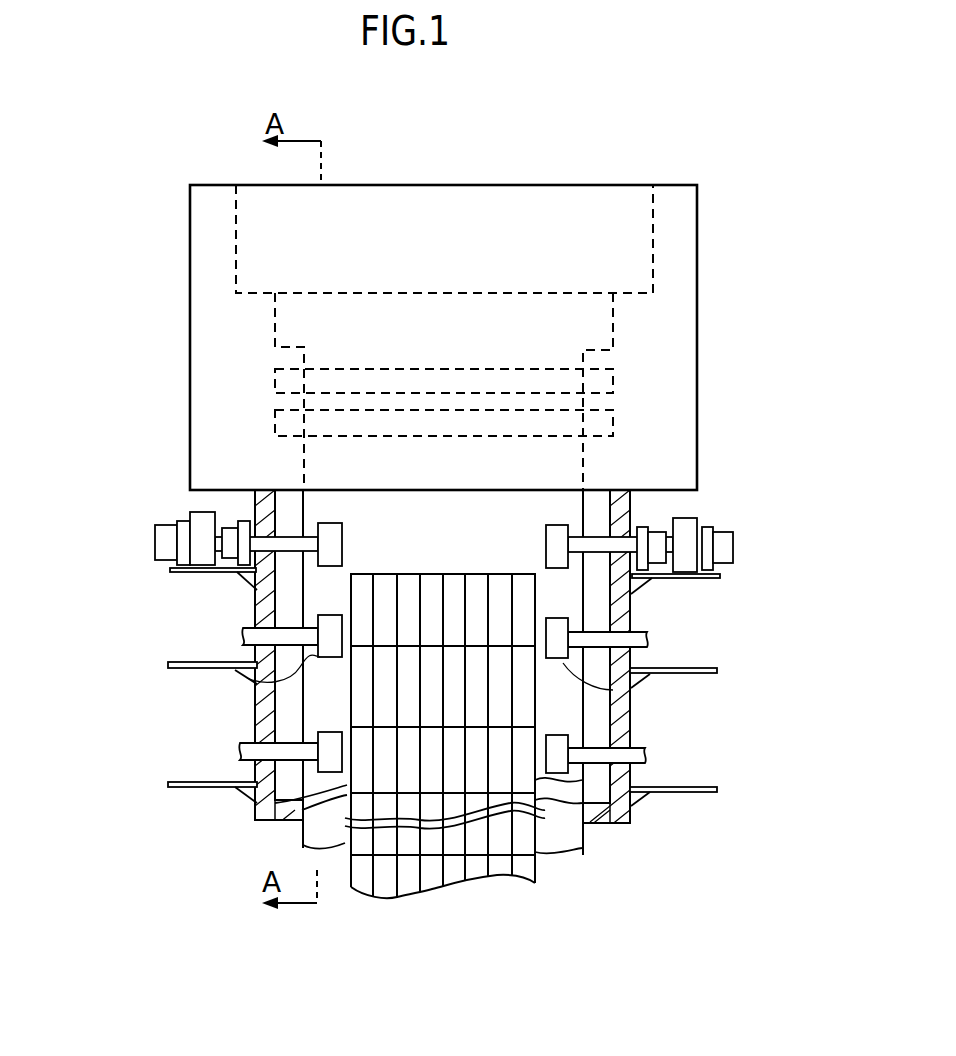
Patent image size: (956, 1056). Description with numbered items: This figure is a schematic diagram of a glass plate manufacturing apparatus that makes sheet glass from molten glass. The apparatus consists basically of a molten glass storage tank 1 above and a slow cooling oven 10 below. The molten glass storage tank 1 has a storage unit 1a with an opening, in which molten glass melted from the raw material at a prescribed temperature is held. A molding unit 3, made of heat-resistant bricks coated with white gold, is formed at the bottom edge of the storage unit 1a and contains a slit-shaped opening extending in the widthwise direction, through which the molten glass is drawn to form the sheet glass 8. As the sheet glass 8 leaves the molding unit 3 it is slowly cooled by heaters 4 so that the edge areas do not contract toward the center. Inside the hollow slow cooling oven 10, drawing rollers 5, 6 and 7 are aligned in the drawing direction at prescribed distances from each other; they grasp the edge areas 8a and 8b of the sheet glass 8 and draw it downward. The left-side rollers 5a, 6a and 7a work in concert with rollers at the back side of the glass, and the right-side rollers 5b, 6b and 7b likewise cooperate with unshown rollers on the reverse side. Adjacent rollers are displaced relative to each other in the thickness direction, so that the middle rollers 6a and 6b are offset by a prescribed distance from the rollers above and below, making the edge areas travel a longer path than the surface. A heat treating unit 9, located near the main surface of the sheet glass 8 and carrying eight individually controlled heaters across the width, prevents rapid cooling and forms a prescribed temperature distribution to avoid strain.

The molten glass storage tank 1 is at (683, 232).
The storage unit 1a is at (250, 245).
The molding unit 3 is at (300, 330).
The heaters 4 is at (280, 388).
The drawing roller 5 is at (100, 514).
The drawing roller 5a is at (342, 532).
The drawing roller 5b is at (546, 535).
The drawing roller 6 is at (320, 603).
The drawing roller 6a is at (253, 673).
The drawing roller 6b is at (613, 690).
The drawing roller 7 is at (320, 722).
The drawing roller 7a is at (257, 810).
The drawing roller 7b is at (565, 743).
The sheet glass 8 is at (302, 837).
The edge area 8a is at (310, 607).
The edge area 8b is at (576, 613).
The heat treating unit 9 is at (535, 827).
The slow cooling oven 10 is at (630, 820).